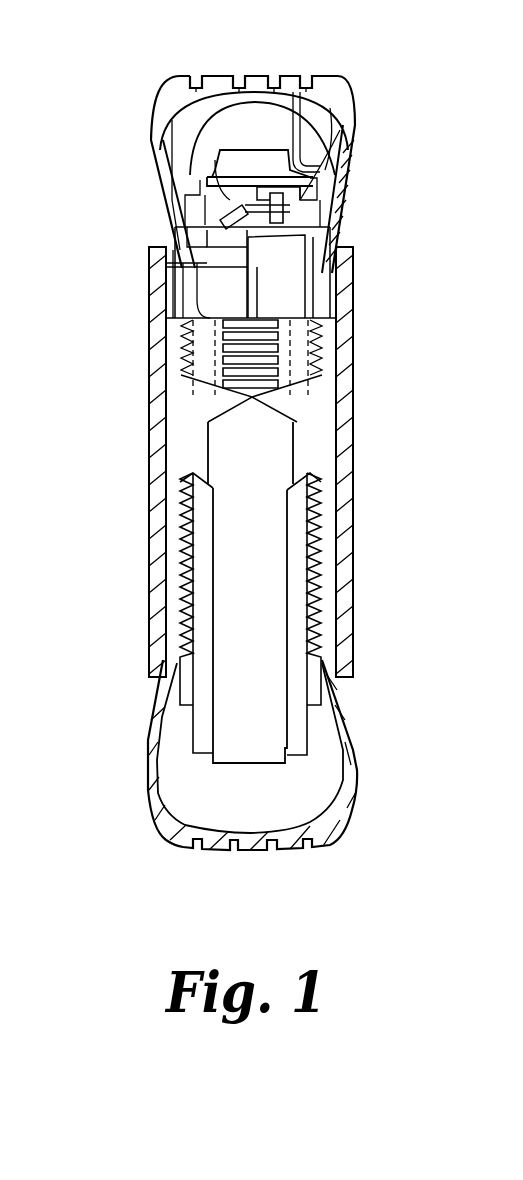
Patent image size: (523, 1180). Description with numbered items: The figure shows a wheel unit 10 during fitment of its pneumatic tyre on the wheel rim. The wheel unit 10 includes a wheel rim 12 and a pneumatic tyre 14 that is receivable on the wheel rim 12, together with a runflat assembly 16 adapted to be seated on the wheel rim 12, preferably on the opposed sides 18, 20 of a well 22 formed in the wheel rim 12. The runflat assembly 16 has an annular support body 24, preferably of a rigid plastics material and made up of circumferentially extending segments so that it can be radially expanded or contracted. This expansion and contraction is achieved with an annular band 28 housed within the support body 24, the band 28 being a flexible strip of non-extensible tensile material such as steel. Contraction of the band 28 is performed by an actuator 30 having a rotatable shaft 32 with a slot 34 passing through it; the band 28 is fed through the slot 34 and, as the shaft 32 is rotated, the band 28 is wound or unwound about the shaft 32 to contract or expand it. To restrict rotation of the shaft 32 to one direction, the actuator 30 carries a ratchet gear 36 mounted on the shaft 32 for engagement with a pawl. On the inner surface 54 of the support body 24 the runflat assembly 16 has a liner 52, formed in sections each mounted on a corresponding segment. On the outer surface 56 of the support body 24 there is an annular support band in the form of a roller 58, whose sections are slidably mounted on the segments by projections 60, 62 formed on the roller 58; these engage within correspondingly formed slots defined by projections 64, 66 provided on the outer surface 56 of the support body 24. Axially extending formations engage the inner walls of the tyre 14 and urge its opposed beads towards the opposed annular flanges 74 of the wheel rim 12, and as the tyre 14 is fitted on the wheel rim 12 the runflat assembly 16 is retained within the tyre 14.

The wheel unit 10 is at (80, 90).
The wheel rim 12 is at (327, 291).
The pneumatic tyre 14 is at (333, 84).
The runflat assembly 16 is at (208, 147).
The opposed side of well 18 is at (190, 283).
The opposed side of well 20 is at (345, 233).
The well 22 is at (183, 238).
The annular support body 24 is at (205, 195).
The annular band 28 is at (303, 352).
The actuator 30 is at (200, 180).
The rotatable shaft 32 is at (285, 195).
The slot 34 is at (312, 178).
The ratchet gear 36 is at (340, 215).
The liner 52 is at (251, 240).
The inner surface 54 is at (222, 215).
The outer surface 56 is at (292, 95).
The roller 58 is at (252, 147).
The projection 60 is at (200, 165).
The projection 62 is at (335, 102).
The projection 64 is at (216, 204).
The projection 66 is at (300, 172).
The annular flanges 74 is at (153, 620).